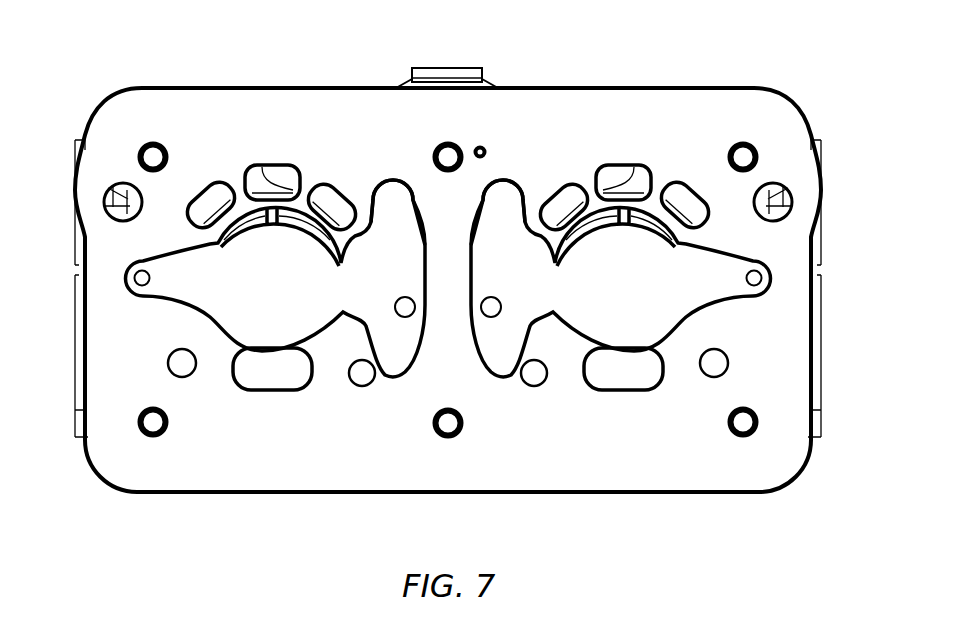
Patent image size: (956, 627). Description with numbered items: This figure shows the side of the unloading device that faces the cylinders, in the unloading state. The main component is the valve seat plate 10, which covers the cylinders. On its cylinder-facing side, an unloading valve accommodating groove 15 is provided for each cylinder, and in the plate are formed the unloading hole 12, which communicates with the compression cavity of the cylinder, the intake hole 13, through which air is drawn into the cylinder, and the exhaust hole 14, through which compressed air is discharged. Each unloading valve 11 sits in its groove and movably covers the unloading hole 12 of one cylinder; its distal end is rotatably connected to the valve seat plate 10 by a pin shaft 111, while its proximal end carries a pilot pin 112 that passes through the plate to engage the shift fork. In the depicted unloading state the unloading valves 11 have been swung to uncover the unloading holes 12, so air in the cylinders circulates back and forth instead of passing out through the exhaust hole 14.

The valve seat plate 10 is at (549, 87).
The unloading valve 11 is at (393, 358).
The pin shaft 111 is at (142, 288).
The pilot pin 112 is at (491, 297).
The unloading hole 12 is at (255, 232).
The intake hole 13 is at (213, 193).
The exhaust hole 14 is at (274, 378).
The unloading valve accommodating groove 15 is at (392, 200).